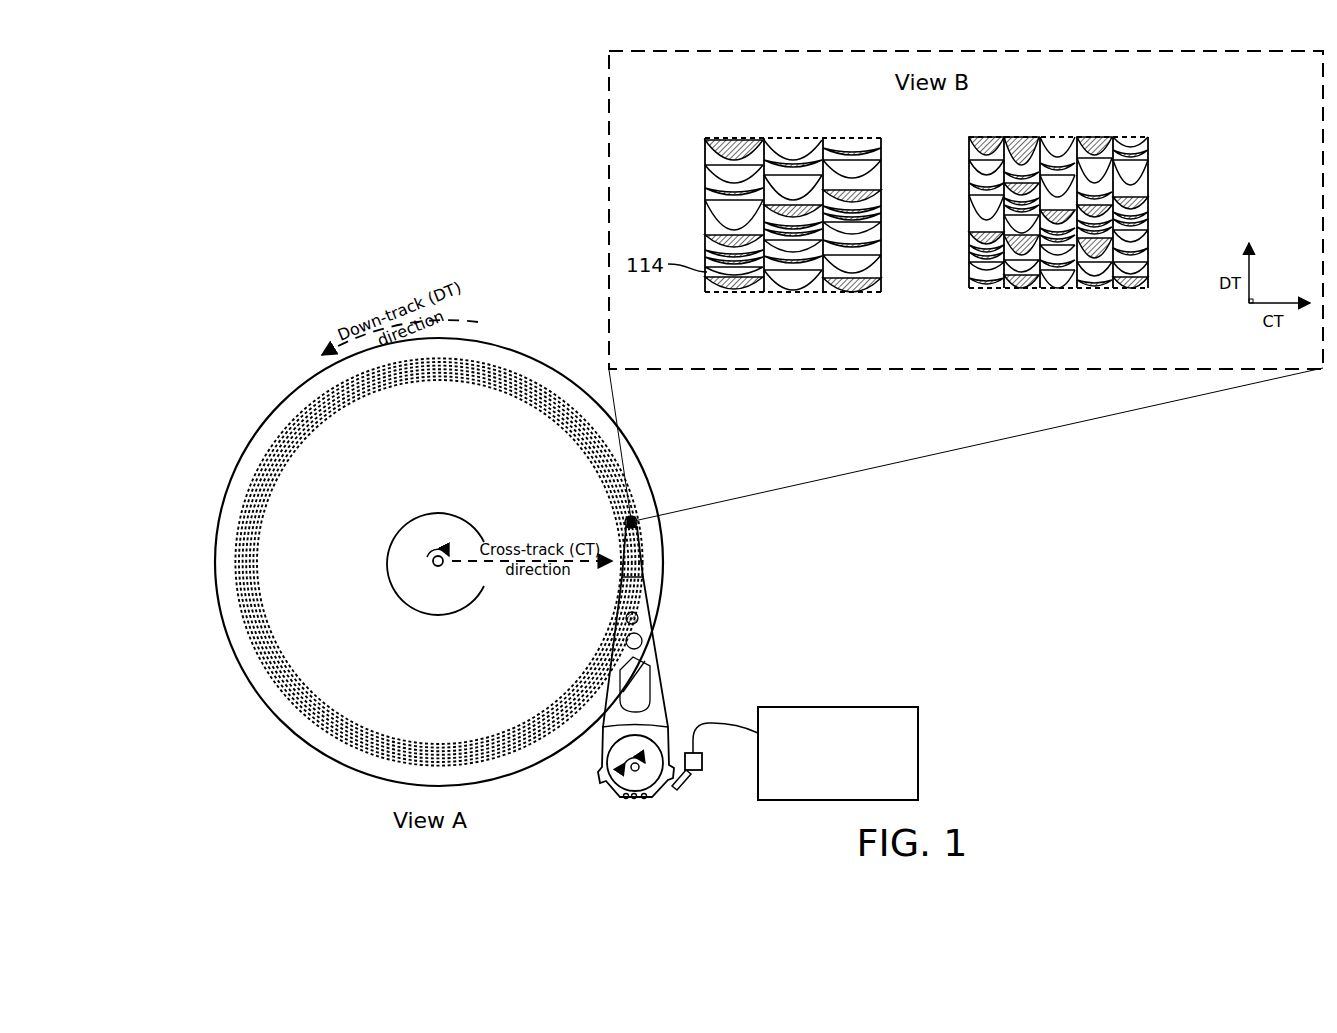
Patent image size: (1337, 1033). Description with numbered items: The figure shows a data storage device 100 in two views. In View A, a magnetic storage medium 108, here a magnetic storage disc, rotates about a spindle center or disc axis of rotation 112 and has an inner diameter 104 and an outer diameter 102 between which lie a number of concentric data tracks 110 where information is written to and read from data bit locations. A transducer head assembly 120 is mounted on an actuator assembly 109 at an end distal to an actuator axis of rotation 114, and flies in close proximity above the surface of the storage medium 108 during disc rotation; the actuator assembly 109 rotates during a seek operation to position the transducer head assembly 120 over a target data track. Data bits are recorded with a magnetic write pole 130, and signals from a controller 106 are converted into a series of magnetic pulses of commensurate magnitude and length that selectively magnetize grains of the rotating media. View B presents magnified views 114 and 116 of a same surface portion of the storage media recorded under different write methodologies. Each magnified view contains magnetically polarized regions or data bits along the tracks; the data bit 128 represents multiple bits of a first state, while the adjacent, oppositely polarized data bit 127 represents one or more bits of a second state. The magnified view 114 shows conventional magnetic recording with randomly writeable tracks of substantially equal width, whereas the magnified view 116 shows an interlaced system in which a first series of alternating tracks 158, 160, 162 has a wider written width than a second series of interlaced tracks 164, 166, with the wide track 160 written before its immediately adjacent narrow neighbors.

The data storage device 100 is at (344, 132).
The outer diameter 102 is at (287, 397).
The inner diameter 104 is at (388, 572).
The controller 106 is at (838, 753).
The magnetic storage medium 108 is at (426, 565).
The actuator assembly 109 is at (652, 653).
The data tracks 110 is at (268, 675).
The disc axis of rotation 112 is at (430, 560).
The actuator axis of rotation / magnified view 114 is at (633, 767).
The magnified view 116 is at (970, 147).
The transducer head assembly 120 is at (638, 522).
The data bit 127 is at (707, 187).
The data bit 128 is at (728, 177).
The write pole 130 is at (676, 788).
The data track 158 is at (984, 292).
The data track 160 is at (1060, 292).
The data track 162 is at (1128, 292).
The data track 164 is at (1021, 292).
The data track 166 is at (1092, 292).